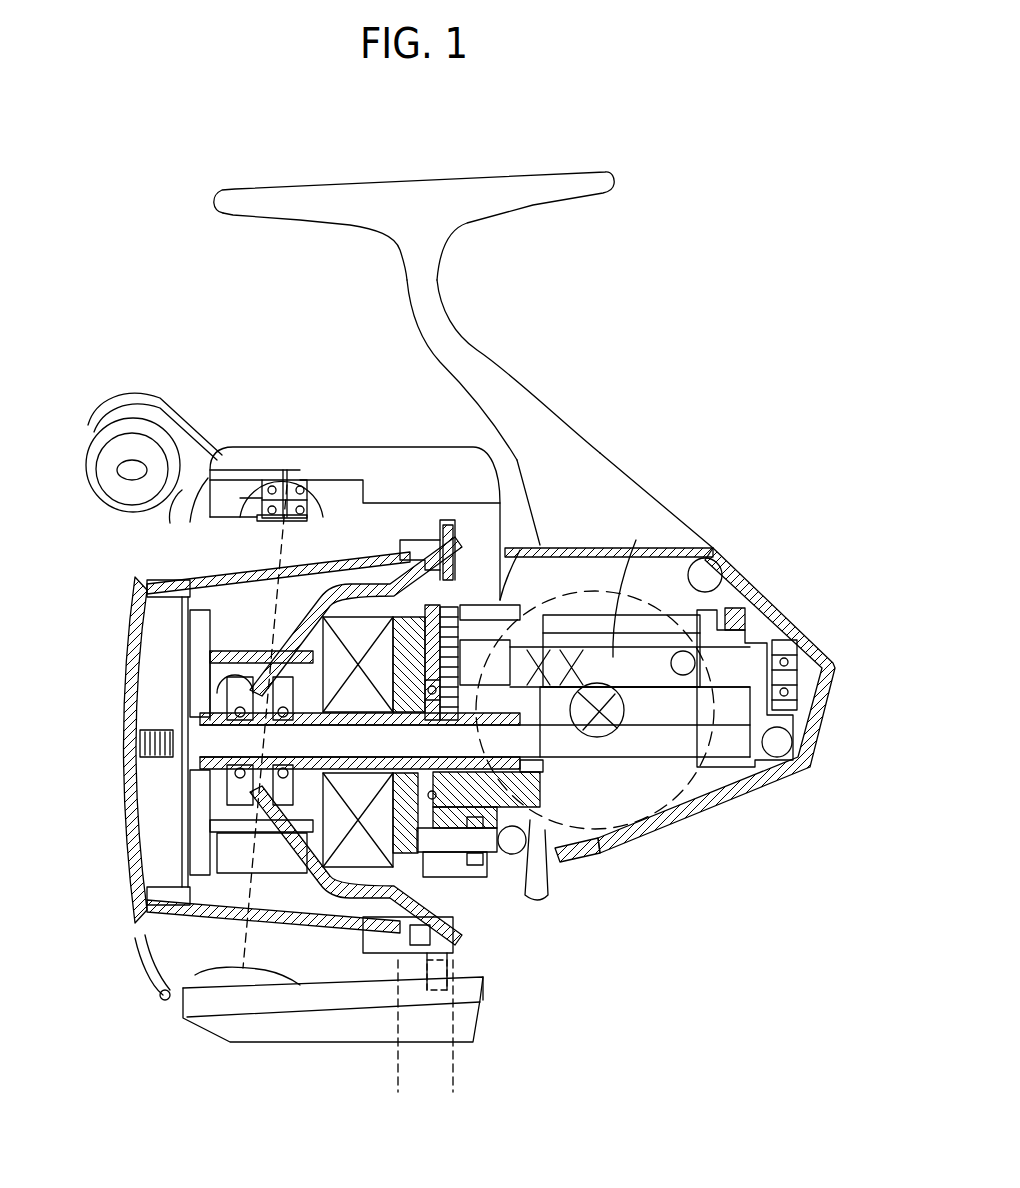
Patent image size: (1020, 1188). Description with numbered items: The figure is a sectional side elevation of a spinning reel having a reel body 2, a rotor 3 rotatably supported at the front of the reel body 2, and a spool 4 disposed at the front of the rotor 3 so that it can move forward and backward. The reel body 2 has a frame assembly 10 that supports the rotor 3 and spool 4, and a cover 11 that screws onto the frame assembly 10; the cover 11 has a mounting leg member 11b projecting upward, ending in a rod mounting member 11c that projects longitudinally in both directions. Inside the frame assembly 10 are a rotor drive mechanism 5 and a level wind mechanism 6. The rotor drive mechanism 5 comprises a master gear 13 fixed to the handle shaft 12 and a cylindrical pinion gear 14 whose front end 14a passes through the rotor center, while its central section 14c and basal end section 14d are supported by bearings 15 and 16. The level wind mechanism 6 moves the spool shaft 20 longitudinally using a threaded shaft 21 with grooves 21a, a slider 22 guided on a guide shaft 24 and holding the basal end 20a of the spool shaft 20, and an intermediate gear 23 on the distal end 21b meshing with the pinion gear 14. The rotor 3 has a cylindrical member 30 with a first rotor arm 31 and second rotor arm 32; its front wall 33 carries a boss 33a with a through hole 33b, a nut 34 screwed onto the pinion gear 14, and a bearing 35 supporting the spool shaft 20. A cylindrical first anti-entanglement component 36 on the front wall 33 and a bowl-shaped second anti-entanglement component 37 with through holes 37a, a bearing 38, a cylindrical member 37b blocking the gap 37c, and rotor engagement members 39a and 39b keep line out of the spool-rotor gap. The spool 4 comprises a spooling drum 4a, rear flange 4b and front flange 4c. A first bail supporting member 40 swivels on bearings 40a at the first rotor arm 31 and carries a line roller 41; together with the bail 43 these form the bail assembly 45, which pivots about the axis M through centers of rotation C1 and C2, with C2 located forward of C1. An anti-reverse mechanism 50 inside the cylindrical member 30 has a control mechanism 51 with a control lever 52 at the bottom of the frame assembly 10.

The reel body 2 is at (648, 485).
The rotor 3 is at (492, 945).
The spool 4 is at (228, 580).
The spooling drum 4a is at (275, 535).
The rear flange 4b is at (384, 530).
The front flange 4c is at (140, 580).
The rotor drive mechanism 5 is at (650, 562).
The level wind mechanism 6 is at (665, 712).
The frame assembly 10 is at (570, 858).
The cover 11 is at (606, 450).
The mounting leg member 11b is at (553, 410).
The rod mounting member 11c is at (518, 198).
The handle shaft 12 is at (605, 732).
The master gear 13 is at (692, 562).
The pinion gear 14 is at (497, 725).
The front end of pinion gear 14a is at (318, 722).
The central section of pinion gear 14c is at (310, 875).
The basal end section of pinion gear 14d is at (515, 715).
The bearing 15 is at (414, 722).
The bearing 16 is at (552, 785).
The spool shaft 20 is at (530, 745).
The basal end of spool shaft 20a is at (730, 760).
The threaded shaft 21 is at (680, 520).
The grooves 21a is at (568, 655).
The distal end of threaded shaft 21b is at (508, 600).
The slider 22 is at (784, 645).
The intermediate gear 23 is at (455, 640).
The guide shaft 24 is at (730, 612).
The cylindrical member 30 is at (380, 915).
The first rotor arm 31 is at (350, 455).
The second rotor arm 32 is at (390, 1030).
The front wall 33 is at (285, 645).
The boss 33a is at (388, 720).
The through hole 33b is at (320, 857).
The nut 34 is at (245, 812).
The bearing 35 is at (280, 722).
The first anti-entanglement component 36 is at (200, 657).
The second anti-entanglement component 37 is at (265, 640).
The arc-shaped through holes 37a is at (258, 850).
The cylindrical member 37b is at (415, 975).
The gap 37c is at (453, 1072).
The bearing 38 is at (250, 793).
The rotor engagement member 39a is at (445, 530).
The rotor engagement member 39b is at (440, 980).
The first bail supporting member 40 is at (205, 512).
The bearings 40a is at (272, 488).
The line roller 41 is at (132, 440).
The bail 43 is at (138, 955).
The bail assembly 45 is at (128, 518).
The anti-reverse mechanism 50 is at (355, 855).
The control mechanism 51 is at (512, 860).
The control lever 52 is at (540, 880).
The center of rotation C1 is at (287, 480).
The center of rotation C2 is at (243, 965).
The pivoting axis M is at (336, 540).